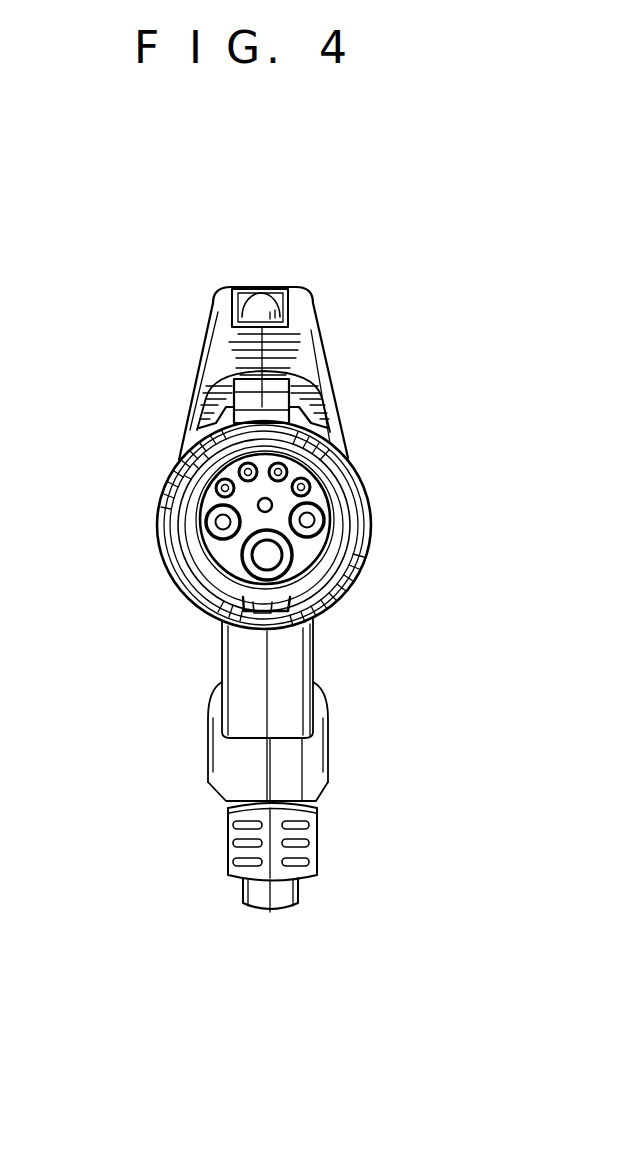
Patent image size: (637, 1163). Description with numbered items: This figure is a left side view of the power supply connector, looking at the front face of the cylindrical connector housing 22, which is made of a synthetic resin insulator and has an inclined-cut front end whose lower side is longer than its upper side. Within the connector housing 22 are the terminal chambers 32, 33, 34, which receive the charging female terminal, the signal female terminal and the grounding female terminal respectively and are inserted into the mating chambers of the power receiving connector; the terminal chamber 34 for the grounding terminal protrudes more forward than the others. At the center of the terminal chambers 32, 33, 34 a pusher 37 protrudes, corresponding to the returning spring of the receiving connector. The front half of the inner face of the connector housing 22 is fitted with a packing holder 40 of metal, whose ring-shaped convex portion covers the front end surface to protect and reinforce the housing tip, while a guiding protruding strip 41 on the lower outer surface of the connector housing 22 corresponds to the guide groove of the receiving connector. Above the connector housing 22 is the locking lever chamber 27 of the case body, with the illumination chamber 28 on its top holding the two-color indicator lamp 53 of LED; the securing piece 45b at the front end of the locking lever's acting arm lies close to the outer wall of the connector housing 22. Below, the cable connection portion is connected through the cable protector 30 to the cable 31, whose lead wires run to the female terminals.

The two-color indicator lamp 53 is at (280, 310).
The illumination chamber 28 is at (280, 307).
The locking lever chamber 27 is at (320, 350).
The securing piece 45b is at (285, 417).
The pusher 37 is at (272, 503).
The terminal chamber 33 is at (212, 497).
The terminal chamber 32 is at (206, 527).
The terminal chamber 34 is at (244, 556).
The packing holder 40 is at (219, 536).
The connector housing 22 is at (213, 605).
The guiding protruding strip 41 is at (275, 612).
The cable protector 30 is at (318, 821).
The cable 31 is at (300, 890).